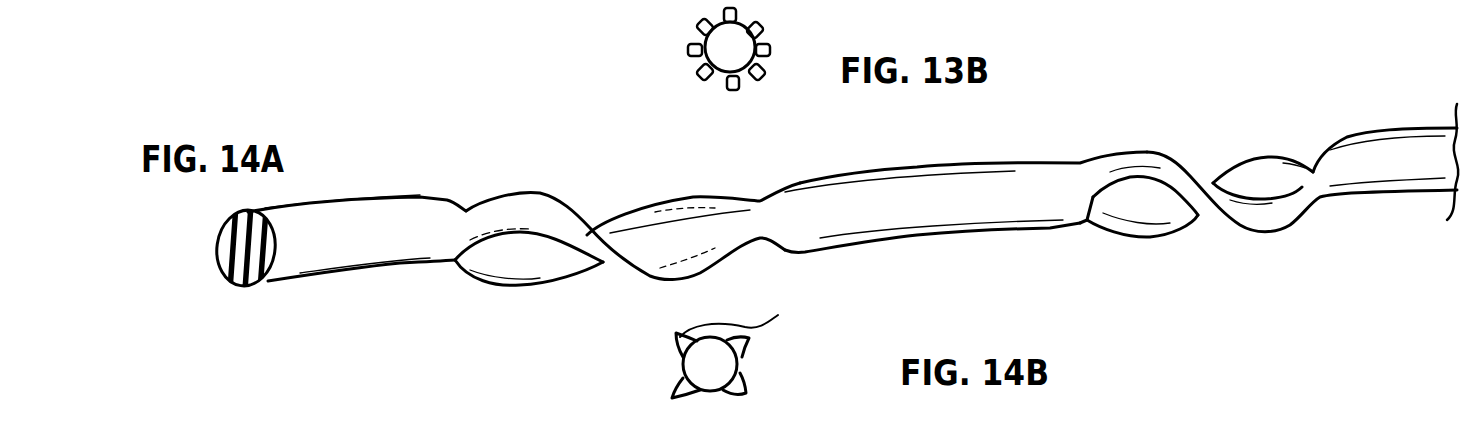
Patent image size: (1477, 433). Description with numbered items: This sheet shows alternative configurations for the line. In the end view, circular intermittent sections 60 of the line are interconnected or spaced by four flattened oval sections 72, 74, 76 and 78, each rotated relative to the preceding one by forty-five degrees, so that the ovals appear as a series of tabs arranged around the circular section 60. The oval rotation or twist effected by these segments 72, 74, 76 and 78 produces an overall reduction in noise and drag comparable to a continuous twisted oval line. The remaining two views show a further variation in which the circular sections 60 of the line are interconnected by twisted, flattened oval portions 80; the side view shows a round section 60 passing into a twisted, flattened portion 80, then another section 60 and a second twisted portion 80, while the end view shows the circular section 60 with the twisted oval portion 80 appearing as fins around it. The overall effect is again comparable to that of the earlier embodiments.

In FIG. 13B, the circular intermittent sections 60 is at (735, 47).
In FIG. 14A, the circular intermittent sections 60 is at (320, 246).
In FIG. 14B, the circular intermittent sections 60 is at (705, 362).
In FIG. 13B, the flattened oval section 72 is at (759, 31).
In FIG. 13B, the flattened oval section 74 is at (766, 50).
In FIG. 13B, the flattened oval section 76 is at (758, 74).
In FIG. 13B, the flattened oval section 78 is at (733, 88).
In FIG. 14A, the twisted, flattened oval portions 80 is at (563, 225).
In FIG. 14B, the twisted, flattened oval portions 80 is at (778, 315).